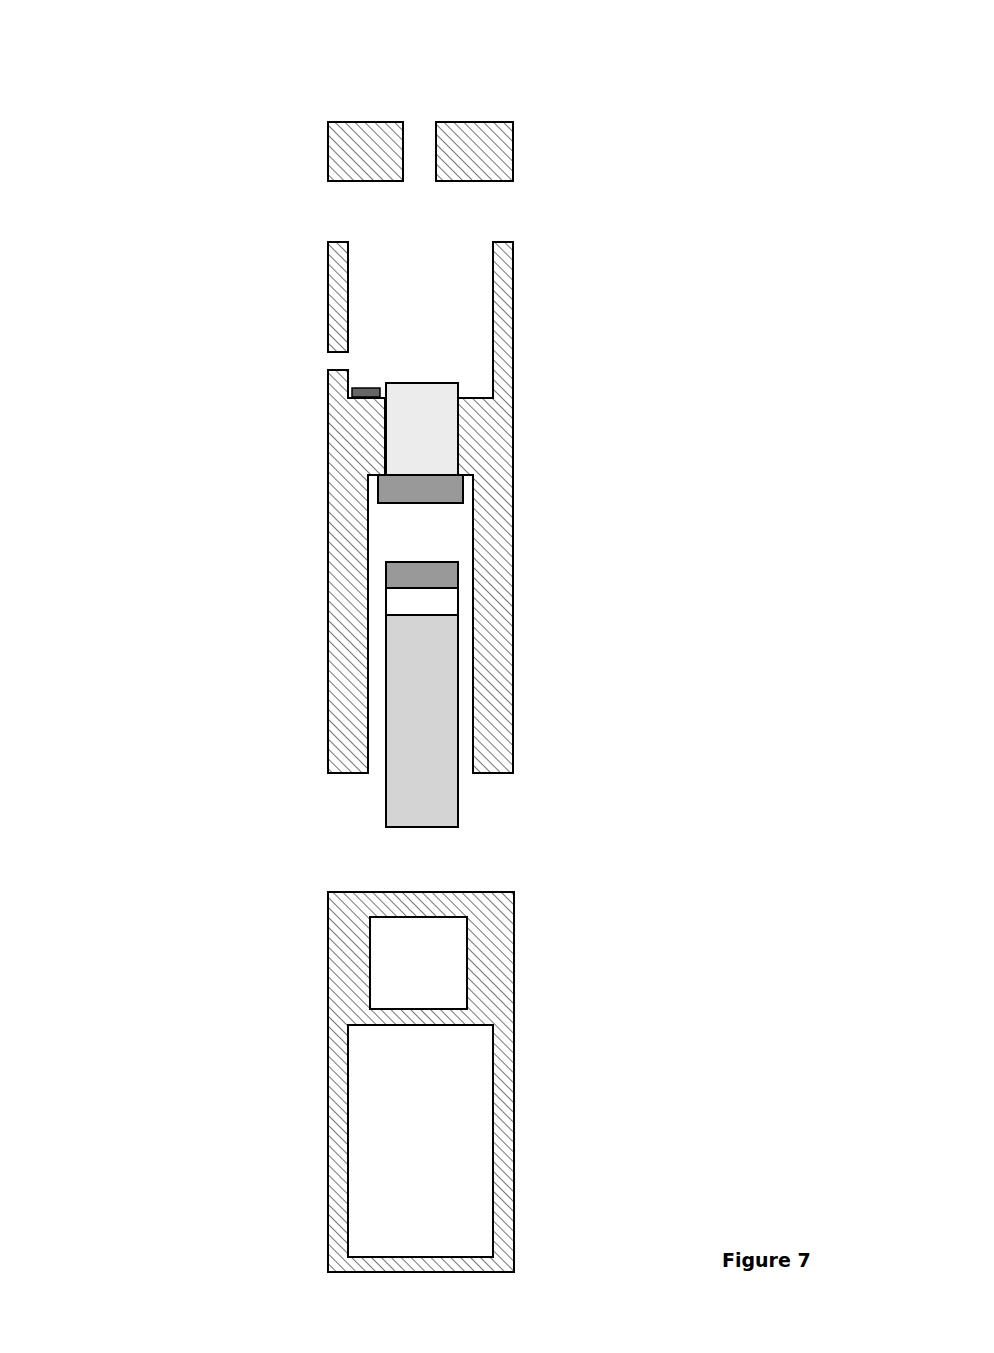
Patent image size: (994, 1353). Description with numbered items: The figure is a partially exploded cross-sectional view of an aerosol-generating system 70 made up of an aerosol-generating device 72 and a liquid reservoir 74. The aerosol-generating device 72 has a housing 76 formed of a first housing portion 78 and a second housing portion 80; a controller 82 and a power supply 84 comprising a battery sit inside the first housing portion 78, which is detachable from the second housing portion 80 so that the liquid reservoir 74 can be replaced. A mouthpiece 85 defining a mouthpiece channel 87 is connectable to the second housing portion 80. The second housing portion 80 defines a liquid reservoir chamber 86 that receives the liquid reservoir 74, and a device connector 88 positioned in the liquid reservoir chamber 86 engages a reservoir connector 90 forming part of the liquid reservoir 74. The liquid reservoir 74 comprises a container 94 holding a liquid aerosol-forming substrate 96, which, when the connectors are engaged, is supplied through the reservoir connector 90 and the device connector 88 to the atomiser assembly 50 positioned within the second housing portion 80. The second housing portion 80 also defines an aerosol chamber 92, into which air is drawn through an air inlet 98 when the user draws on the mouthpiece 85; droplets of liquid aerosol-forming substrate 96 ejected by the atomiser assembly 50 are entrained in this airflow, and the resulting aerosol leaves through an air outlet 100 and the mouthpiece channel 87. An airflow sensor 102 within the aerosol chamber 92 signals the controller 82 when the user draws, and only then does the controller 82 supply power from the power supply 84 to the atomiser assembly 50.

The aerosol-generating system 70 is at (166, 121).
The mouthpiece 85 is at (514, 137).
The mouthpiece channel 87 is at (414, 130).
The air outlet 100 is at (462, 243).
The second housing portion 80 is at (513, 525).
The aerosol chamber 92 is at (377, 277).
The air inlet 98 is at (328, 362).
The aerosol-generating device 72 is at (326, 524).
The housing 76 is at (326, 677).
The airflow sensor 102 is at (362, 398).
The atomiser assembly 50 is at (450, 425).
The device connector 88 is at (443, 486).
The reservoir connector 90 is at (447, 580).
The container 94 is at (458, 604).
The liquid aerosol-forming substrate 96 is at (397, 806).
The liquid reservoir 74 is at (461, 806).
The liquid reservoir chamber 86 is at (378, 624).
The first housing portion 78 is at (328, 936).
The controller 82 is at (418, 963).
The power supply 84 is at (420, 1141).